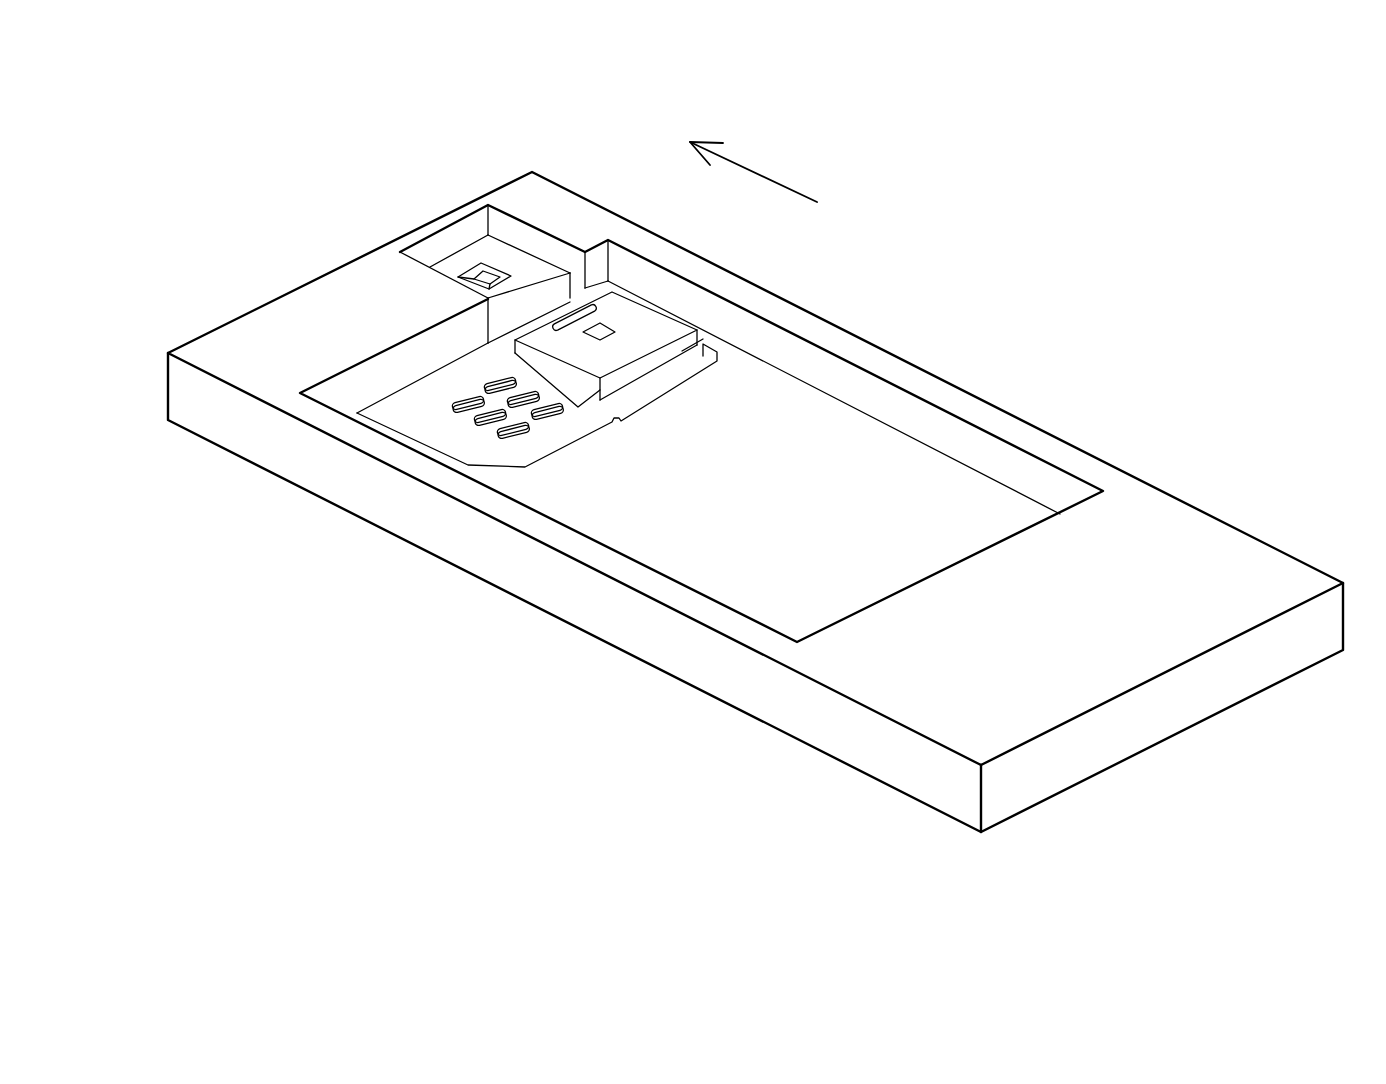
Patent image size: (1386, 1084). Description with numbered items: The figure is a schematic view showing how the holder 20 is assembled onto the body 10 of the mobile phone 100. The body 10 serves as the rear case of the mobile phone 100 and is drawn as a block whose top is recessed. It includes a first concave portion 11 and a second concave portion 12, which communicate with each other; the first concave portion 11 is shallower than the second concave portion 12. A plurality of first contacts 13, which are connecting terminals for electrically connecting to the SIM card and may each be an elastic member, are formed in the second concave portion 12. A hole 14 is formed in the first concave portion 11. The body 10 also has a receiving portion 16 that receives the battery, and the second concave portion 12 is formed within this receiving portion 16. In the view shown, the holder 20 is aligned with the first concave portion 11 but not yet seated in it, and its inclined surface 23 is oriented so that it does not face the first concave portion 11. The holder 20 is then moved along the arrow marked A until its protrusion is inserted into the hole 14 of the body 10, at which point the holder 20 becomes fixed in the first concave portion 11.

The mobile phone 100 is at (68, 109).
The body 10 is at (755, 502).
The first concave portion 11 is at (485, 205).
The second concave portion 12 is at (503, 302).
The first contacts 13 is at (471, 283).
The hole 14 is at (484, 193).
The receiving portion 16 is at (834, 395).
The holder 20 is at (691, 274).
The inclined surface 23 is at (774, 292).